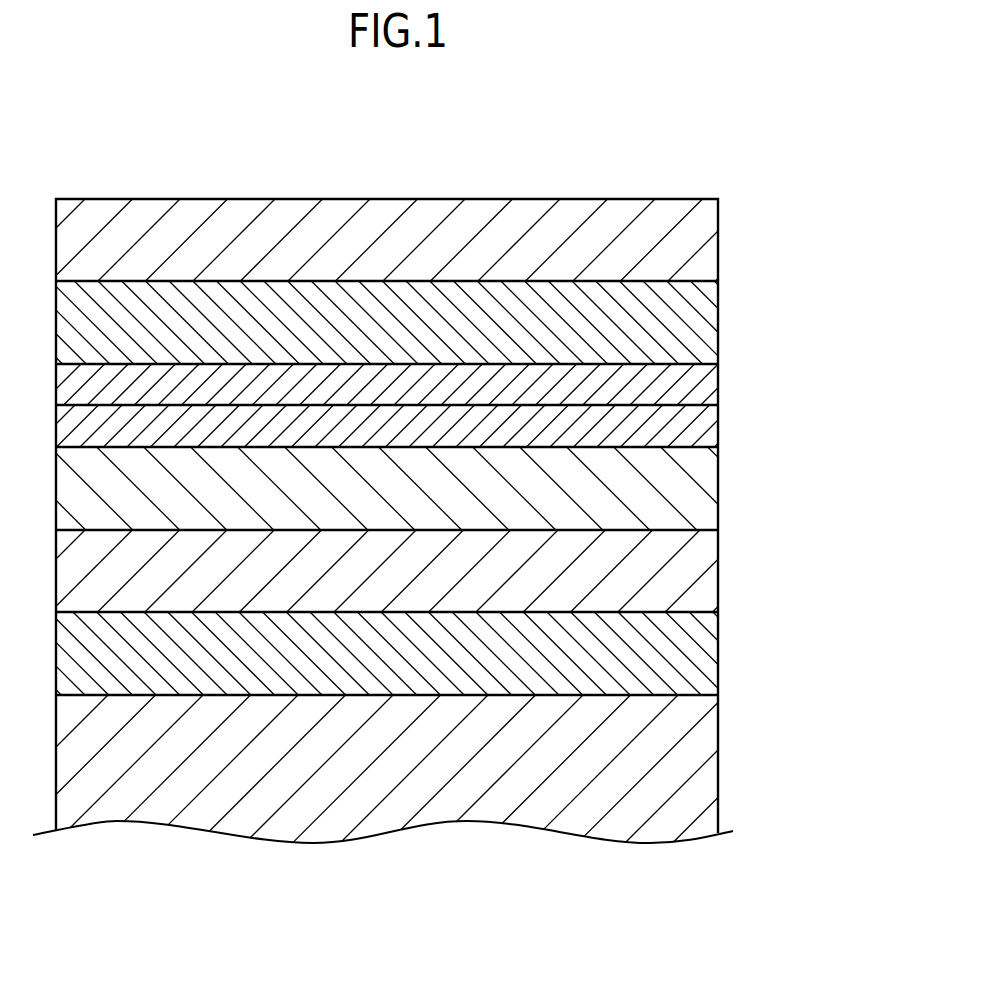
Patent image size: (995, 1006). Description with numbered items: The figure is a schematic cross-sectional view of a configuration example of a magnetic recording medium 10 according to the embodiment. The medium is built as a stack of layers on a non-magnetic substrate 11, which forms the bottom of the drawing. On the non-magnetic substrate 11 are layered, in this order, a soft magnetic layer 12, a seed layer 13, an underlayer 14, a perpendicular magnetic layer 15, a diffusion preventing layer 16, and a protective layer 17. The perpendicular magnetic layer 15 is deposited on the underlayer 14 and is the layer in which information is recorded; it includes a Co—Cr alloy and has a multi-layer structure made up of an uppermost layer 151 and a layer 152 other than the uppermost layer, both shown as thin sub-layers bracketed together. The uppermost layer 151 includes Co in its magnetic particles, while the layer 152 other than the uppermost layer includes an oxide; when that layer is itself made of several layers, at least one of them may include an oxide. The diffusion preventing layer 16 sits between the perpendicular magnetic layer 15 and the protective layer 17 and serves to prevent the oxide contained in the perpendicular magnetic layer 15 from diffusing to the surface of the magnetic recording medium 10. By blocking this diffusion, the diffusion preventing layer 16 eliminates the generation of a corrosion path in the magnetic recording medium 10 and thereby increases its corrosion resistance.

The magnetic recording medium 10 is at (693, 195).
The non-magnetic substrate 11 is at (703, 768).
The soft magnetic layer 12 is at (703, 652).
The seed layer 13 is at (703, 568).
The underlayer 14 is at (703, 487).
The perpendicular magnetic layer 15 is at (456, 405).
The uppermost layer 151 is at (705, 383).
The layer other than the uppermost layer 152 is at (430, 426).
The diffusion preventing layer 16 is at (705, 320).
The protective layer 17 is at (707, 237).